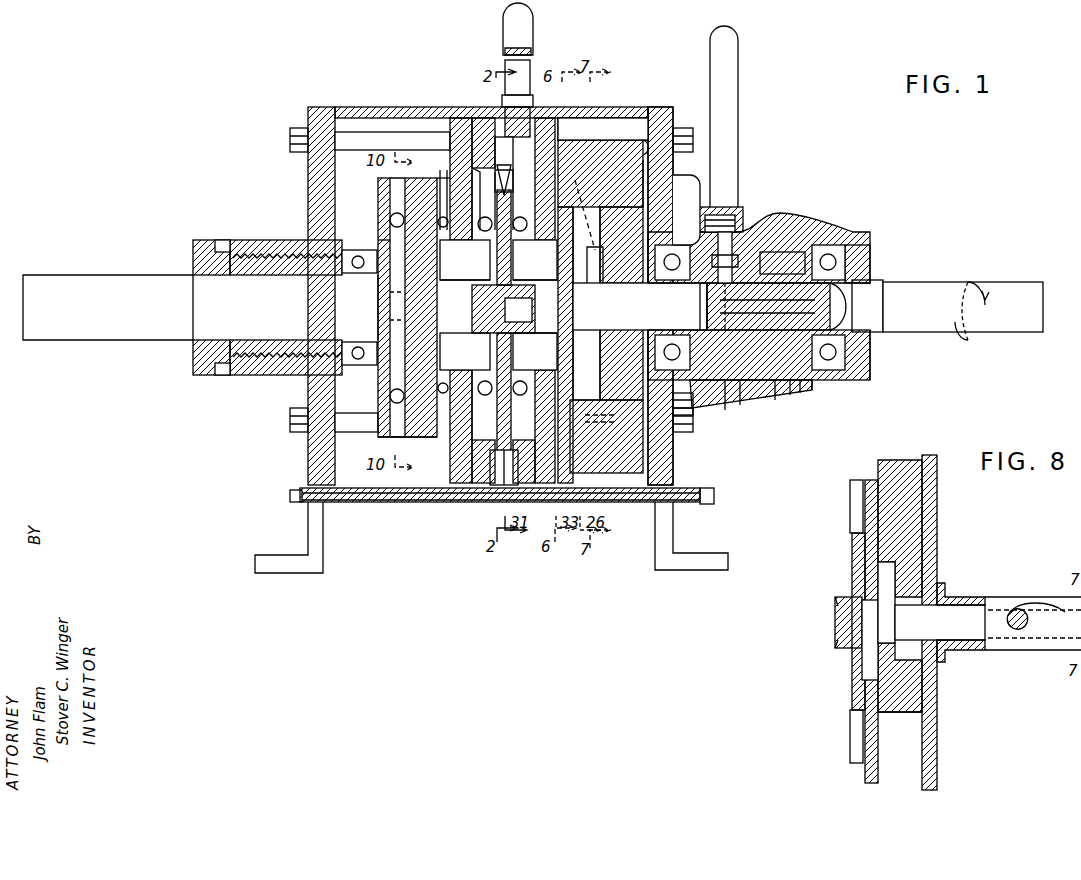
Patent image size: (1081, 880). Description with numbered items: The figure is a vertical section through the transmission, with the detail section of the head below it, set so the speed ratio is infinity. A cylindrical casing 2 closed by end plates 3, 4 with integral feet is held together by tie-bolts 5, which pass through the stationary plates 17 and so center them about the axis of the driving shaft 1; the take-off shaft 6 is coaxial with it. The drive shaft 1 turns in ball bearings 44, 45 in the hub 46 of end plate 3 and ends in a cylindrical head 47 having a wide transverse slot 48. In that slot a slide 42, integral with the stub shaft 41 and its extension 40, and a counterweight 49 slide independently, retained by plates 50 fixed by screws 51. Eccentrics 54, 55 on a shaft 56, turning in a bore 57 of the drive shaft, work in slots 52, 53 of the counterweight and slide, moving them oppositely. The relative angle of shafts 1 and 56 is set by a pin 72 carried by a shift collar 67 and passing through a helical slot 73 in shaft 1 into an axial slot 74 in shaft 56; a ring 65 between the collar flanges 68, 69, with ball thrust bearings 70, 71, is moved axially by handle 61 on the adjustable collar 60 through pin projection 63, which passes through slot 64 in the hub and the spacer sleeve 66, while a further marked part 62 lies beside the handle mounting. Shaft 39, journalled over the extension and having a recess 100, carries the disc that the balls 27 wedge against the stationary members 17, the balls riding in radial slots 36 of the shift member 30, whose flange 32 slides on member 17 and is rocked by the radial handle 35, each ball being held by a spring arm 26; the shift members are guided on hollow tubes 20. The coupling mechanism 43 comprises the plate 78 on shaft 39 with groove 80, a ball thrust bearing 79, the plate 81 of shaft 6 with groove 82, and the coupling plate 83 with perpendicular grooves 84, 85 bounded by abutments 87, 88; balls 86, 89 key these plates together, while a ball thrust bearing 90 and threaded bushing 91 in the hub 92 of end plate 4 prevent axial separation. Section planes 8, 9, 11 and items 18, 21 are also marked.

In FIG. 1, the driving shaft 1 is at (948, 282).
In FIG. 8, the driving shaft 1 is at (1040, 600).
In FIG. 1, the cylindrical casing 2 is at (625, 108).
In FIG. 1, the end plate 3 is at (662, 107).
In FIG. 1, the end plate 4 is at (320, 107).
In FIG. 1, the tie-bolts 5 is at (372, 132).
In FIG. 1, the take-off shaft 6 is at (104, 312).
In FIG. 1, the section line 8 is at (543, 318).
In FIG. 1, the section line 9 is at (727, 186).
In FIG. 1, the section line 11 is at (593, 246).
In FIG. 1, the stationary plate 17 is at (472, 492).
In FIG. 1, the shaft lower portion 18 is at (504, 409).
In FIG. 1, the hollow tubes 20 is at (508, 305).
In FIG. 1, the passage 21 is at (595, 378).
In FIG. 1, the spring arm 26 is at (465, 160).
In FIG. 1, the rolling elements 27 is at (498, 305).
In FIG. 1, the shift member 30 is at (497, 480).
In FIG. 1, the side flange 32 is at (452, 492).
In FIG. 1, the radial handle 35 is at (535, 40).
In FIG. 1, the radial slots 36 is at (514, 172).
In FIG. 1, the shaft 39 is at (465, 273).
In FIG. 1, the extension 40 is at (503, 309).
In FIG. 1, the stub shaft 41 is at (535, 343).
In FIG. 8, the stub shaft 41 is at (868, 652).
In FIG. 1, the slide 42 is at (600, 485).
In FIG. 8, the slide 42 is at (858, 738).
In FIG. 1, the translating mechanism 43 is at (378, 437).
In FIG. 1, the ball bearing 44 is at (868, 245).
In FIG. 1, the ball bearing 45 is at (745, 230).
In FIG. 1, the hub 46 is at (850, 236).
In FIG. 1, the cylindrical head 47 is at (680, 235).
In FIG. 8, the cylindrical head 47 is at (938, 547).
In FIG. 1, the transverse slot 48 is at (645, 440).
In FIG. 8, the transverse slot 48 is at (915, 742).
In FIG. 1, the counterweight 49 is at (600, 450).
In FIG. 8, the counterweight 49 is at (912, 700).
In FIG. 1, the plates 50 is at (590, 115).
In FIG. 8, the plates 50 is at (858, 510).
In FIG. 1, the screws 51 is at (614, 120).
In FIG. 1, the slot 52 is at (692, 228).
In FIG. 8, the slot 52 is at (890, 602).
In FIG. 1, the slot 53 is at (702, 240).
In FIG. 8, the slot 53 is at (835, 612).
In FIG. 1, the eccentric 54 is at (712, 245).
In FIG. 8, the eccentric 54 is at (996, 604).
In FIG. 1, the eccentric 55 is at (708, 252).
In FIG. 8, the eccentric 55 is at (862, 632).
In FIG. 1, the shaft 56 is at (662, 312).
In FIG. 8, the shaft 56 is at (958, 632).
In FIG. 1, the bore 57 is at (868, 365).
In FIG. 8, the bore 57 is at (985, 647).
In FIG. 1, the adjustable collar 60 is at (770, 228).
In FIG. 1, the handle 61 is at (740, 36).
In FIG. 1, the adjusting screw 62 is at (735, 218).
In FIG. 1, the pin projection 63 is at (775, 222).
In FIG. 1, the transverse slot 64 is at (805, 217).
In FIG. 1, the ring 65 is at (770, 402).
In FIG. 1, the spacer sleeve 66 is at (742, 402).
In FIG. 1, the shift collar 67 is at (775, 404).
In FIG. 1, the flange 68 is at (703, 406).
In FIG. 1, the flange 69 is at (790, 405).
In FIG. 1, the ball thrust bearing 70 is at (746, 431).
In FIG. 1, the ball thrust bearing 71 is at (795, 410).
In FIG. 1, the pin 72 is at (768, 291).
In FIG. 1, the slot 73 is at (800, 394).
In FIG. 1, the slot 74 is at (830, 296).
In FIG. 1, the circular plate 78 is at (440, 222).
In FIG. 1, the ball thrust bearing 79 is at (447, 212).
In FIG. 1, the groove 80 is at (465, 351).
In FIG. 1, the plate 81 is at (388, 210).
In FIG. 1, the groove 82 is at (378, 240).
In FIG. 1, the coupling plate 83 is at (437, 200).
In FIG. 1, the groove 84 is at (380, 195).
In FIG. 1, the groove 85 is at (376, 292).
In FIG. 1, the balls 86 is at (392, 222).
In FIG. 1, the abutment 87 is at (432, 182).
In FIG. 1, the abutment 88 is at (362, 266).
In FIG. 1, the balls 89 is at (388, 310).
In FIG. 1, the ball thrust bearing 90 is at (300, 376).
In FIG. 1, the threaded bushing 91 is at (195, 352).
In FIG. 1, the hub 92 is at (218, 376).
In FIG. 1, the recess 100 is at (535, 272).